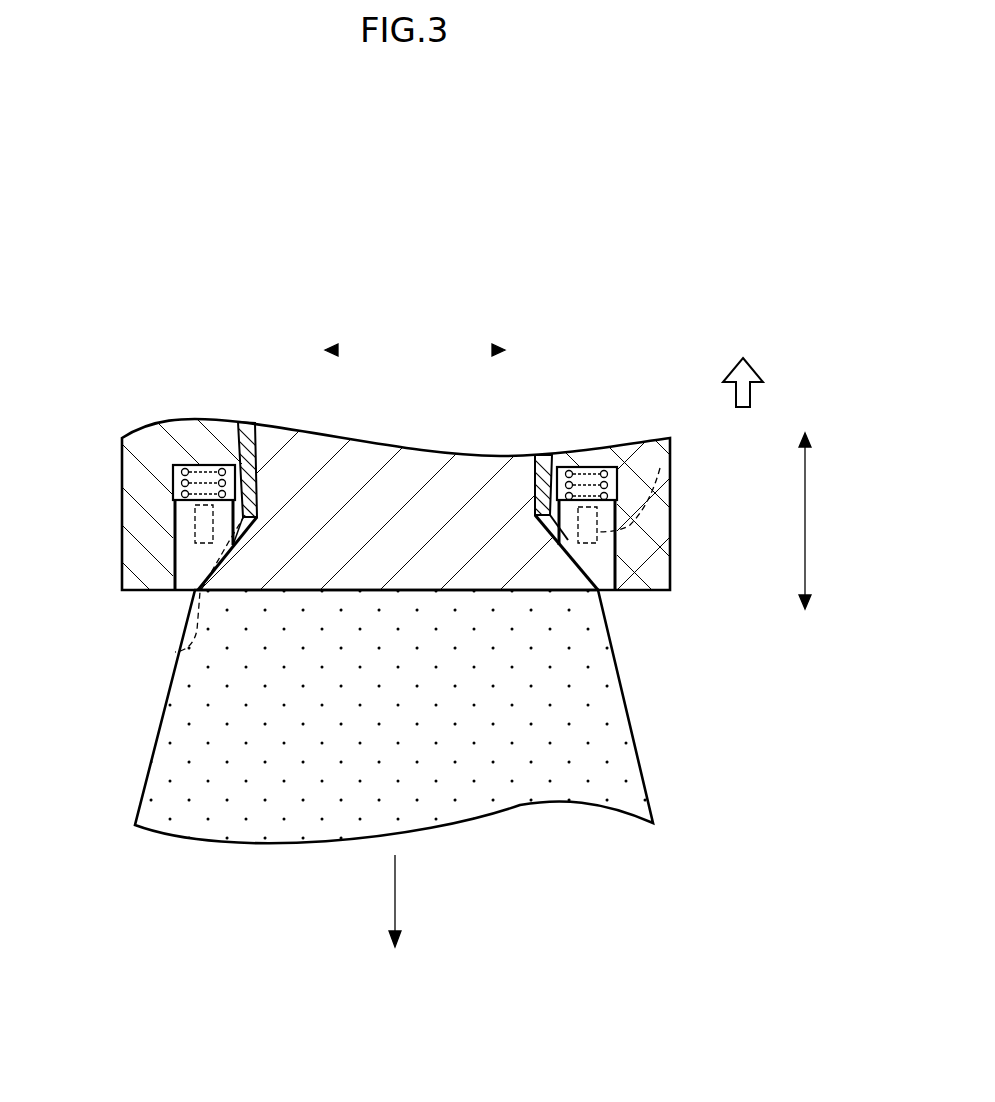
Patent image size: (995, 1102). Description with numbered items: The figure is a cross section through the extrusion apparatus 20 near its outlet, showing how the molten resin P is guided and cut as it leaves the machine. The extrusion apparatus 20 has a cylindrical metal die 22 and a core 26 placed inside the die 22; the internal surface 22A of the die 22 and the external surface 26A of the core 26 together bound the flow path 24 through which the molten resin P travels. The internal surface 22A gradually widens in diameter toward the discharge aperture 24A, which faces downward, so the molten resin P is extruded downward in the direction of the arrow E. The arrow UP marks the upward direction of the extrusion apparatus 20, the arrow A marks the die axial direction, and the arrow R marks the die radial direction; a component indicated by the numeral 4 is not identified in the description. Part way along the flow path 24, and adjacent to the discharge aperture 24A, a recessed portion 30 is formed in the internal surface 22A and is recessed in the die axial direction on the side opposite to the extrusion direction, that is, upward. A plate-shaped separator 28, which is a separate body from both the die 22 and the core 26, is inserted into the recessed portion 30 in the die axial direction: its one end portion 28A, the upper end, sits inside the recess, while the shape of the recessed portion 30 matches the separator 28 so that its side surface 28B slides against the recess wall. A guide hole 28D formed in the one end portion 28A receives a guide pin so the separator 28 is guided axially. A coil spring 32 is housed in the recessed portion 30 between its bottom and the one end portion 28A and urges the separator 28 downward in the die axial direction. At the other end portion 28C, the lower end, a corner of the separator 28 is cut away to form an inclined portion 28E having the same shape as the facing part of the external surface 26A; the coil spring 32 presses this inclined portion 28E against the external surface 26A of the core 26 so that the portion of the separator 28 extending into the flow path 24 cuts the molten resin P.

The extrusion apparatus 20 is at (110, 332).
The recording apparatus body 4 is at (151, 489).
The die 22 is at (674, 493).
The internal surface 22A is at (535, 452).
The flow path 24 is at (240, 420).
The discharge aperture 24A is at (175, 652).
The core 26 is at (541, 594).
The external surface 26A is at (540, 490).
The separator 28 is at (622, 568).
The one end portion 28A is at (618, 472).
The side surface 28B is at (622, 548).
The other end portion 28C is at (608, 590).
The guide hole 28D is at (660, 468).
The inclined portion 28E is at (571, 590).
The recessed portion 30 is at (569, 470).
The coil spring 32 is at (605, 470).
The molten resin P is at (652, 783).
The die radial direction R is at (497, 350).
The upward direction UP is at (752, 366).
The die axial direction A is at (807, 520).
The extrusion direction E is at (398, 890).